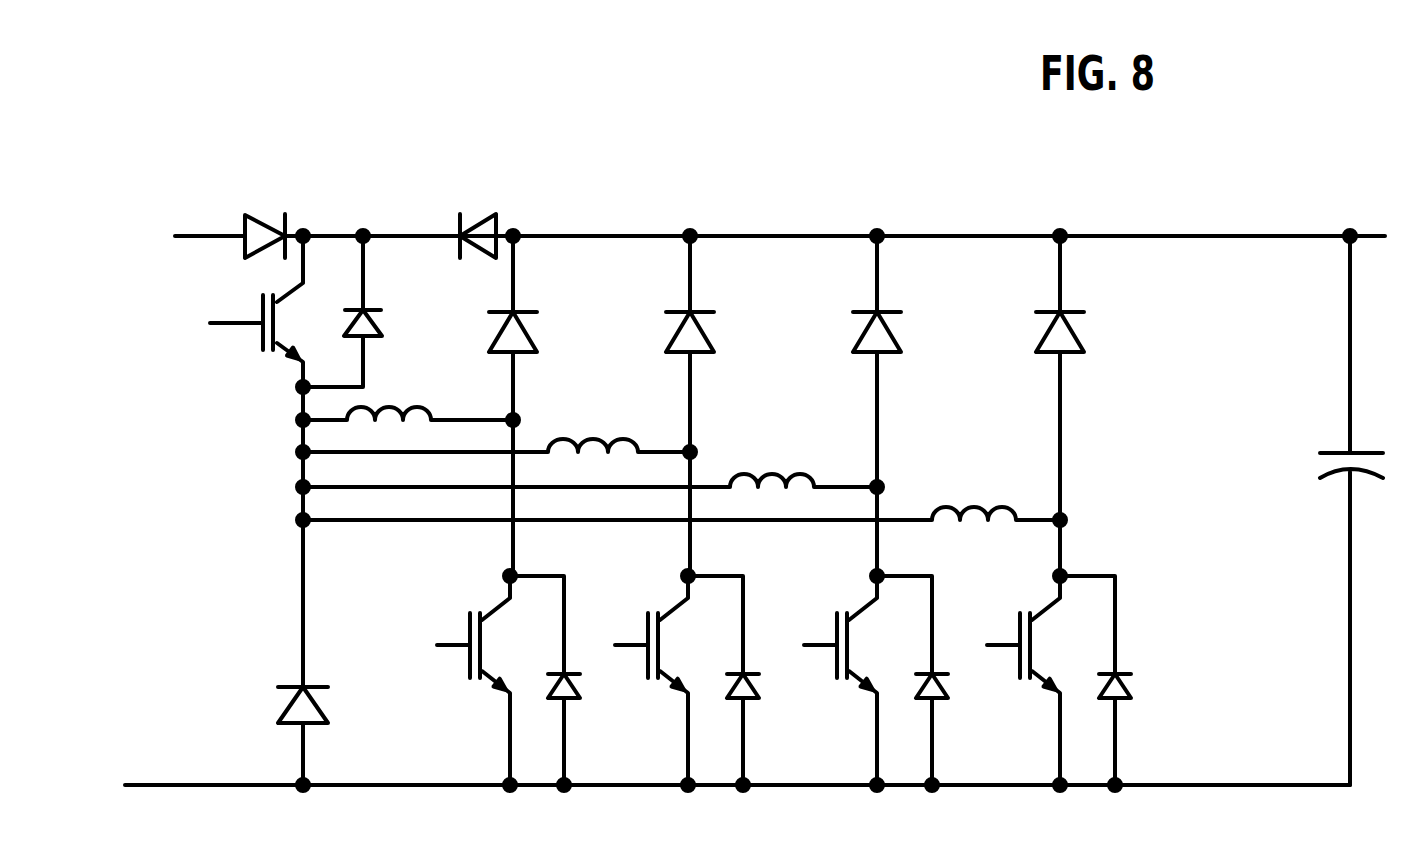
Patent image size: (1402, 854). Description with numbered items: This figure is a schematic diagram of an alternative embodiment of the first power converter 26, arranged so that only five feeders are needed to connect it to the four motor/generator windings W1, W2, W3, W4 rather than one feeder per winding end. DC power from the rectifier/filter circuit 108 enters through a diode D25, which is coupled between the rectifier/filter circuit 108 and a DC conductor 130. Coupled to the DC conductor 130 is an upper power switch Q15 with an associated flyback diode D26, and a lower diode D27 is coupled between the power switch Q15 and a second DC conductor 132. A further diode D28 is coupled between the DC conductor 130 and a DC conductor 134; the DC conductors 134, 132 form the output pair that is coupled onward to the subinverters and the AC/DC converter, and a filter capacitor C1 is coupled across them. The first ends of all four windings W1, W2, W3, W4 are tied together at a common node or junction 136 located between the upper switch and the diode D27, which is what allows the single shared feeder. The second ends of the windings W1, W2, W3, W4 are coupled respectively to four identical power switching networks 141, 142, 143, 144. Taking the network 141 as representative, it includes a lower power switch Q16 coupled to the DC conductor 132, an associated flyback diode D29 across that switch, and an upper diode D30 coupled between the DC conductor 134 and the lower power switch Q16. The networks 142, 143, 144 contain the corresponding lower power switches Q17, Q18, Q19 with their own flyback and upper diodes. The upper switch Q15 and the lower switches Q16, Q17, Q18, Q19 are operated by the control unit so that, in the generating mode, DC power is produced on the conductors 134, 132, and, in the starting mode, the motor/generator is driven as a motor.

The rectifier/filter circuit 108 is at (130, 255).
The diode D25 is at (260, 226).
The DC conductor 130 is at (297, 228).
The upper power switch Q15 is at (263, 340).
The flyback diode D26 is at (380, 333).
The diode D28 is at (480, 218).
The upper diode D30 is at (527, 335).
The DC conductor 134 is at (587, 234).
The first power converter 26 is at (776, 212).
The common node or junction 136 is at (300, 472).
The electrical winding W1 is at (402, 410).
The electrical winding W2 is at (588, 440).
The electrical winding W3 is at (766, 478).
The electrical winding W4 is at (995, 455).
The power switching network 141 is at (538, 384).
The power switching network 142 is at (720, 420).
The power switching network 143 is at (900, 421).
The power switching network 144 is at (1077, 476).
The lower diode D27 is at (285, 712).
The second DC conductor 132 is at (168, 784).
The lower power switch Q16 is at (468, 668).
The flyback diode D29 is at (565, 670).
The power switch Q17 is at (645, 668).
The power switch Q18 is at (833, 665).
The power switch Q19 is at (1017, 665).
The filter capacitor C1 is at (1337, 455).